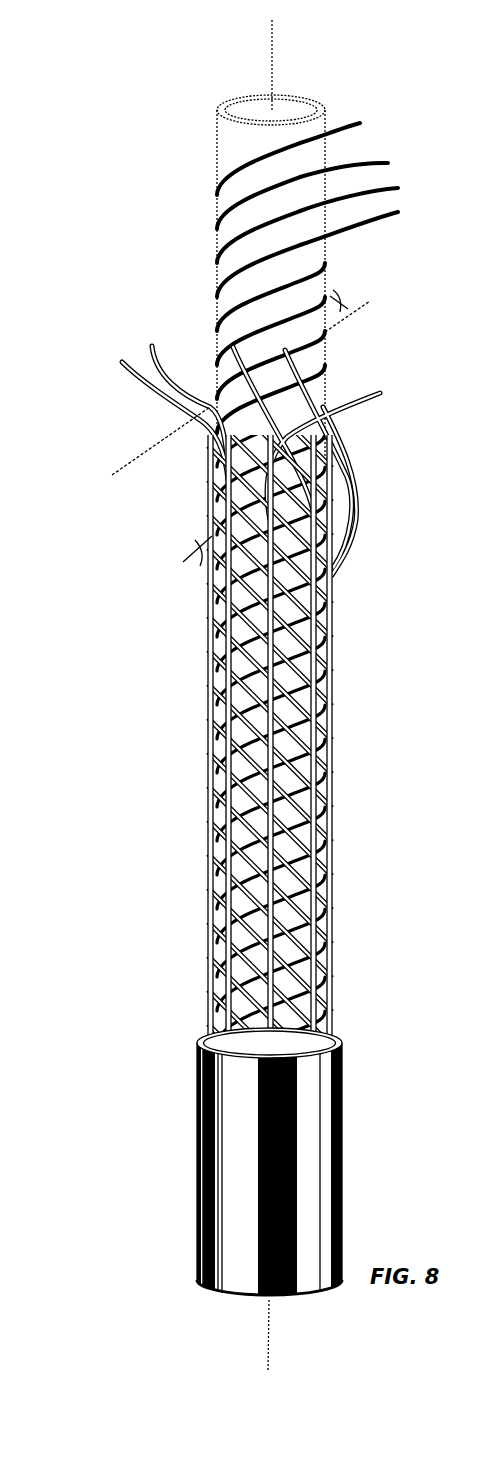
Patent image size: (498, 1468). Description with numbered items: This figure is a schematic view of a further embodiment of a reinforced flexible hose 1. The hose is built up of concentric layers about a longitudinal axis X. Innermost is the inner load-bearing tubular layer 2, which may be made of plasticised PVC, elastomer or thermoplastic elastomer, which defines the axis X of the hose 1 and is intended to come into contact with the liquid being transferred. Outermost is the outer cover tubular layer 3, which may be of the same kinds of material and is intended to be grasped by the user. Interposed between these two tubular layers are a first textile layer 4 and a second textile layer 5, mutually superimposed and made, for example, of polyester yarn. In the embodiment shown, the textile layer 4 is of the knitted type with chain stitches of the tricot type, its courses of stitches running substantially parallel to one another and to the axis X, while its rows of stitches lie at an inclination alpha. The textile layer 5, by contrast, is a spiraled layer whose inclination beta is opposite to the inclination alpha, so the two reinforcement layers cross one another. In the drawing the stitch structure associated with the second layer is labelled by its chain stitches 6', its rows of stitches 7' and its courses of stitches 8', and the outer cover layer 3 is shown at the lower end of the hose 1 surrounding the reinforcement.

The reinforced flexible hose 1 is at (128, 158).
The inner load-bearing tubular layer 2 is at (235, 140).
The outer cover tubular layer 3 is at (305, 1192).
The first textile layer 4 is at (206, 226).
The second textile layer 5 is at (200, 831).
The chain stitches of the second textile layer 6' is at (179, 750).
The rows of stitches of the second textile layer 7' is at (352, 750).
The courses of stitches of the second textile layer 8' is at (237, 1110).
The axis of the hose X is at (281, 79).